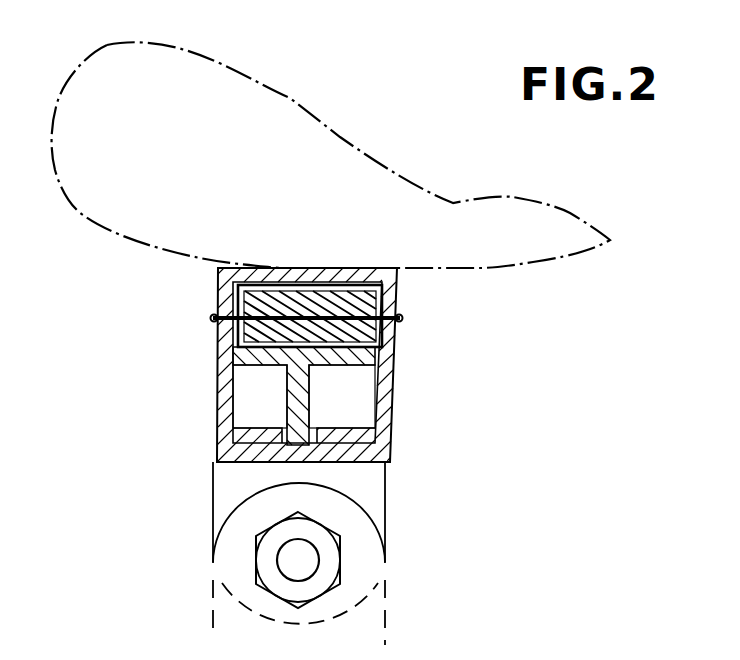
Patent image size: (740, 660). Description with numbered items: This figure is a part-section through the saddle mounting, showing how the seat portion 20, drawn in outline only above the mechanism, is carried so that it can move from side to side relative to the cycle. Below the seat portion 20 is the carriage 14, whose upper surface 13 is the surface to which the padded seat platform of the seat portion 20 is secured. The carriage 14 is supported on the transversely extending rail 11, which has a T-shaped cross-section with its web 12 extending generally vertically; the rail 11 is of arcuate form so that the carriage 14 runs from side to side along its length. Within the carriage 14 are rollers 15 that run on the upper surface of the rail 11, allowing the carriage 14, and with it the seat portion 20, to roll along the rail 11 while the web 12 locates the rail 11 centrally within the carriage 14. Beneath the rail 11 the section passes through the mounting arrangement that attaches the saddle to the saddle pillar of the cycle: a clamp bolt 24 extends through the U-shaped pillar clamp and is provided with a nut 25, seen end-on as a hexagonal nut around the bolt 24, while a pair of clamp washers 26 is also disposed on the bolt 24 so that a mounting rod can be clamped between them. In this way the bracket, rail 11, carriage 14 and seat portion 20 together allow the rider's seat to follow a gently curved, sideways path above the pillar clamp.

The seat portion 20 is at (289, 99).
The upper surface 13 is at (288, 267).
The rollers 15 is at (393, 302).
The carriage 14 is at (237, 345).
The rail 11 is at (282, 387).
The web 12 is at (315, 397).
The clamp bolt 24 is at (287, 560).
The nut 25 is at (332, 560).
The clamp washers 26 is at (235, 575).